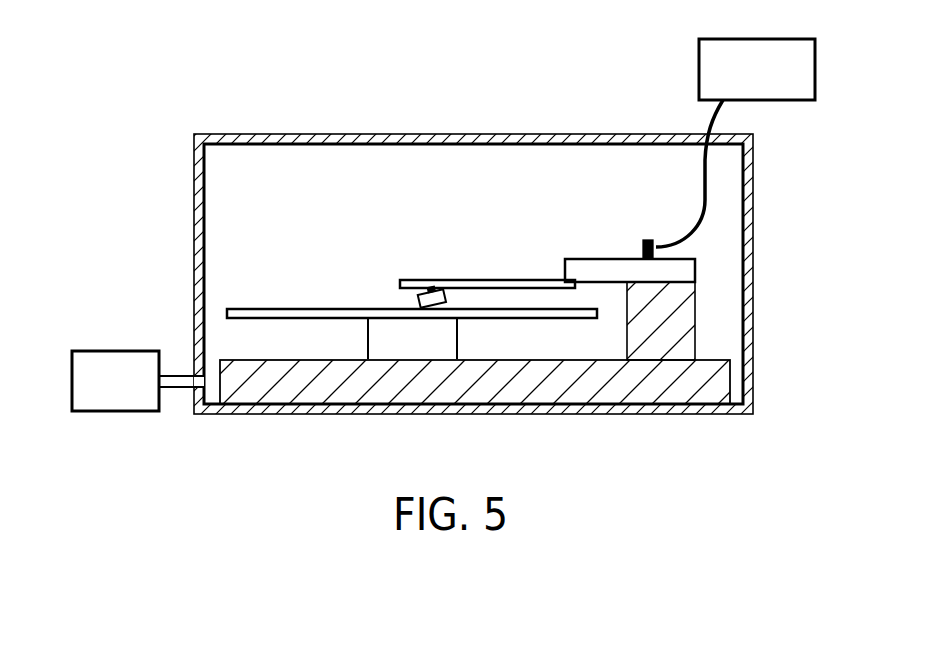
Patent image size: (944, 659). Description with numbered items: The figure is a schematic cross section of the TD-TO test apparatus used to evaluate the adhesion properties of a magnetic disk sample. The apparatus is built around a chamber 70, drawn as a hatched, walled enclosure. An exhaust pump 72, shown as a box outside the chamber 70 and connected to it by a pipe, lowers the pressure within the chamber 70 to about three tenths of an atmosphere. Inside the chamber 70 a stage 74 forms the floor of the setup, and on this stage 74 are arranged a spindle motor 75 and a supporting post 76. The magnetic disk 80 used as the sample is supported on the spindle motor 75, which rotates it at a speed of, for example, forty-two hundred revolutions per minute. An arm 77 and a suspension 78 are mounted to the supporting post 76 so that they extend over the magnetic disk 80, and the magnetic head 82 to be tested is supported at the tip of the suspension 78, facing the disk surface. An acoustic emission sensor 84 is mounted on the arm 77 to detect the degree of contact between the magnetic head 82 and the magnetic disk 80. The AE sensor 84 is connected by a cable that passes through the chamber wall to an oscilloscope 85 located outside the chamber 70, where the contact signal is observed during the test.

The chamber 70 is at (318, 134).
The exhaust pump 72 is at (113, 351).
The stage 74 is at (616, 390).
The spindle motor 75 is at (409, 350).
The supporting post 76 is at (683, 320).
The arm 77 is at (593, 268).
The suspension 78 is at (505, 280).
The magnetic disk 80 is at (310, 309).
The magnetic head 82 is at (440, 280).
The acoustic emission (AE) sensor 84 is at (648, 240).
The oscilloscope 85 is at (702, 67).